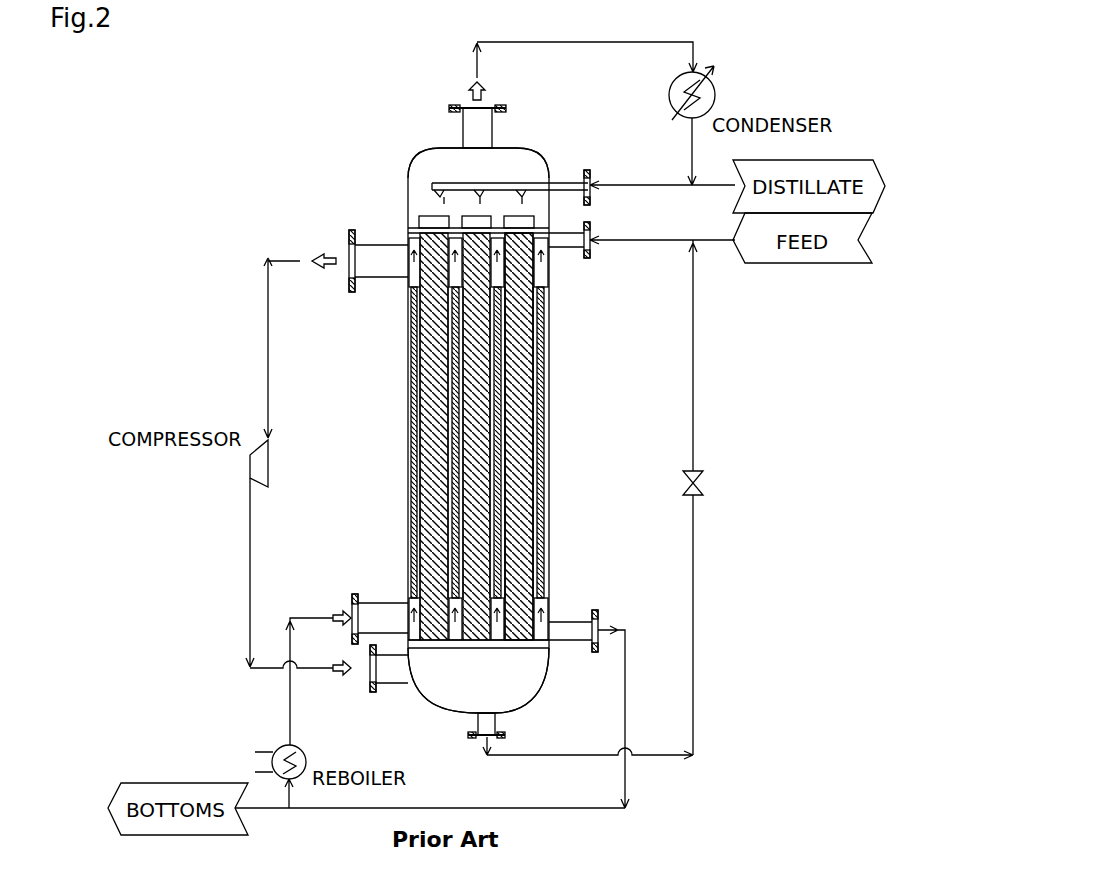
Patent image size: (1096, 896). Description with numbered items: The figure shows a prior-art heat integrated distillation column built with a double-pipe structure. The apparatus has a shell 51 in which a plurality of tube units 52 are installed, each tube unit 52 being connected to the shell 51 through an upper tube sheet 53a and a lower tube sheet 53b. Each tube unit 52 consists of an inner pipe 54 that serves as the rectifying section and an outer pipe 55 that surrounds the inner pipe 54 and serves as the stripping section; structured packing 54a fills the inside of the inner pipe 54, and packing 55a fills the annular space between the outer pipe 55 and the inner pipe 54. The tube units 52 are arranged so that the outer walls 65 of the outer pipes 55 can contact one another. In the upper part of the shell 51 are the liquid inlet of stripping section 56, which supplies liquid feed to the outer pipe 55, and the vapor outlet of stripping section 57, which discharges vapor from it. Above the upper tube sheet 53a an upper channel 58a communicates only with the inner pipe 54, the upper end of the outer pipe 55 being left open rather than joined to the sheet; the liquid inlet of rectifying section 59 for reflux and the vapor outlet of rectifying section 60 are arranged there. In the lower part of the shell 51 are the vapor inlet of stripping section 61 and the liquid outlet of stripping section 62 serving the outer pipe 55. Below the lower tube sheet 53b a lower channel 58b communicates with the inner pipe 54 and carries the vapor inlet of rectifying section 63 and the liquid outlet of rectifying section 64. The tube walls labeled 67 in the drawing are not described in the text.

The shell 51 is at (405, 430).
The tube unit 52 is at (550, 353).
The upper tube sheet 53a is at (412, 226).
The lower tube sheet 53b is at (420, 652).
The inner pipe 54 is at (420, 345).
The packing 54a is at (513, 392).
The outer pipe 55 is at (420, 380).
The packing 55a is at (510, 430).
The liquid inlet of stripping section 56 is at (594, 260).
The vapor outlet of stripping section 57 is at (340, 280).
The upper channel 58a is at (508, 145).
The lower channel 58b is at (520, 715).
The liquid inlet of rectifying section 59 is at (596, 195).
The vapor outlet of rectifying section 60 is at (460, 107).
The vapor inlet of stripping section 61 is at (348, 600).
The liquid outlet of stripping section 62 is at (600, 620).
The vapor inlet of rectifying section 63 is at (365, 682).
The liquid outlet of rectifying section 64 is at (482, 748).
The outer wall 65 is at (420, 525).
The tube wall 67 is at (409, 570).